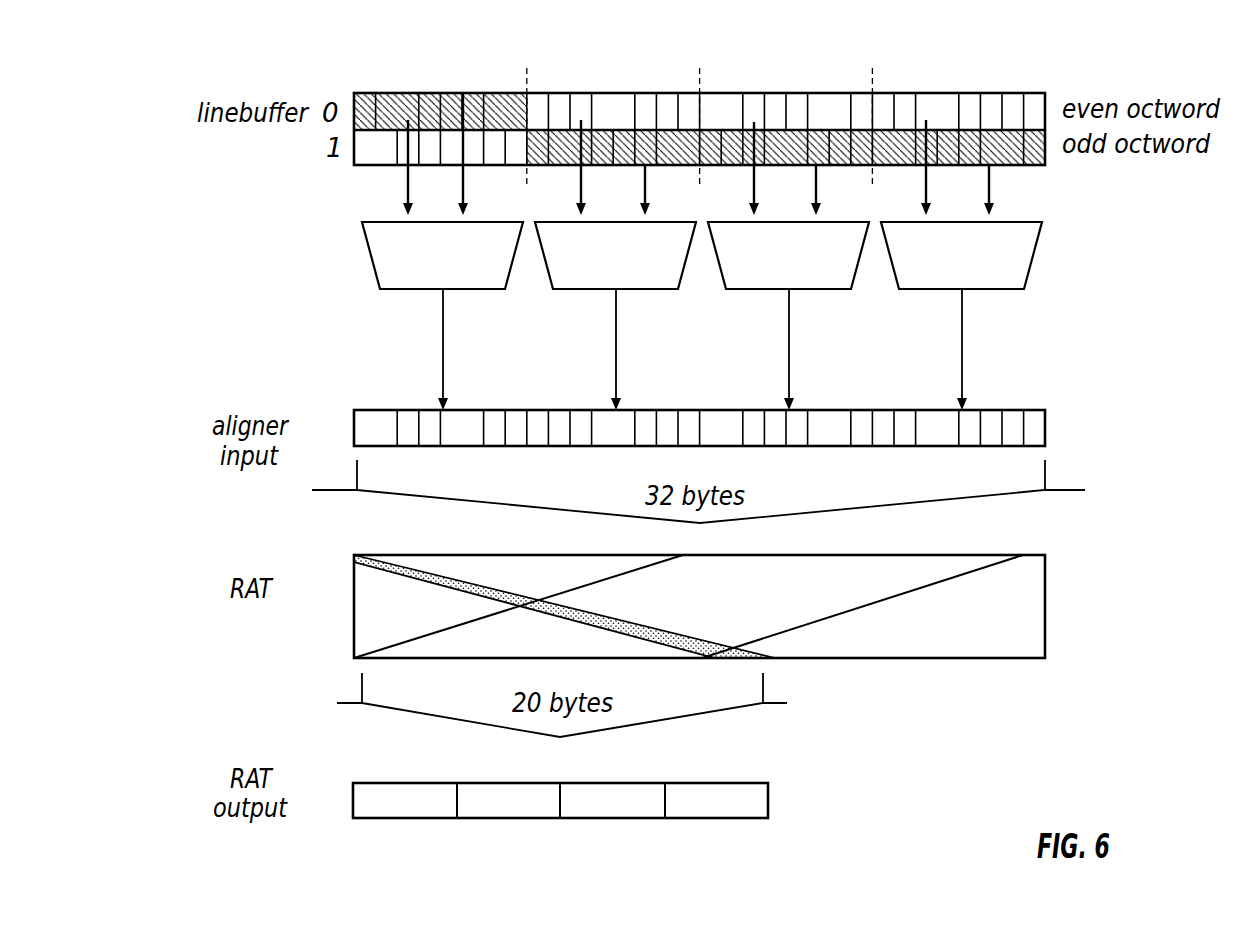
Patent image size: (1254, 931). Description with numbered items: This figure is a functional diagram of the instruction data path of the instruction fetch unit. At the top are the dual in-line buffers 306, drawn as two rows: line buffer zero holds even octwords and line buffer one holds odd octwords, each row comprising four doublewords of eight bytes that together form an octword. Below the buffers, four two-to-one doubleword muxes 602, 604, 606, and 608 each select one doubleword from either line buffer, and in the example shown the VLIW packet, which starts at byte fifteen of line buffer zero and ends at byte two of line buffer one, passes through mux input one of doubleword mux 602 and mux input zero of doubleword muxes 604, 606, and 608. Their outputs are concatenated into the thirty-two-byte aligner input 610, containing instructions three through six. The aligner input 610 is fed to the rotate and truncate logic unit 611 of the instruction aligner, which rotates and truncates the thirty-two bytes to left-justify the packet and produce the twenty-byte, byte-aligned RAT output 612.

The dual in-line buffers 306 is at (392, 91).
The doubleword mux 0 602 is at (398, 291).
The doubleword mux 1 604 is at (585, 291).
The doubleword mux 2 606 is at (760, 291).
The doubleword mux 3 608 is at (934, 291).
The aligner input 610 is at (405, 410).
The rotate and truncate logic (RAT) unit 611 is at (407, 555).
The RAT output 612 is at (402, 782).